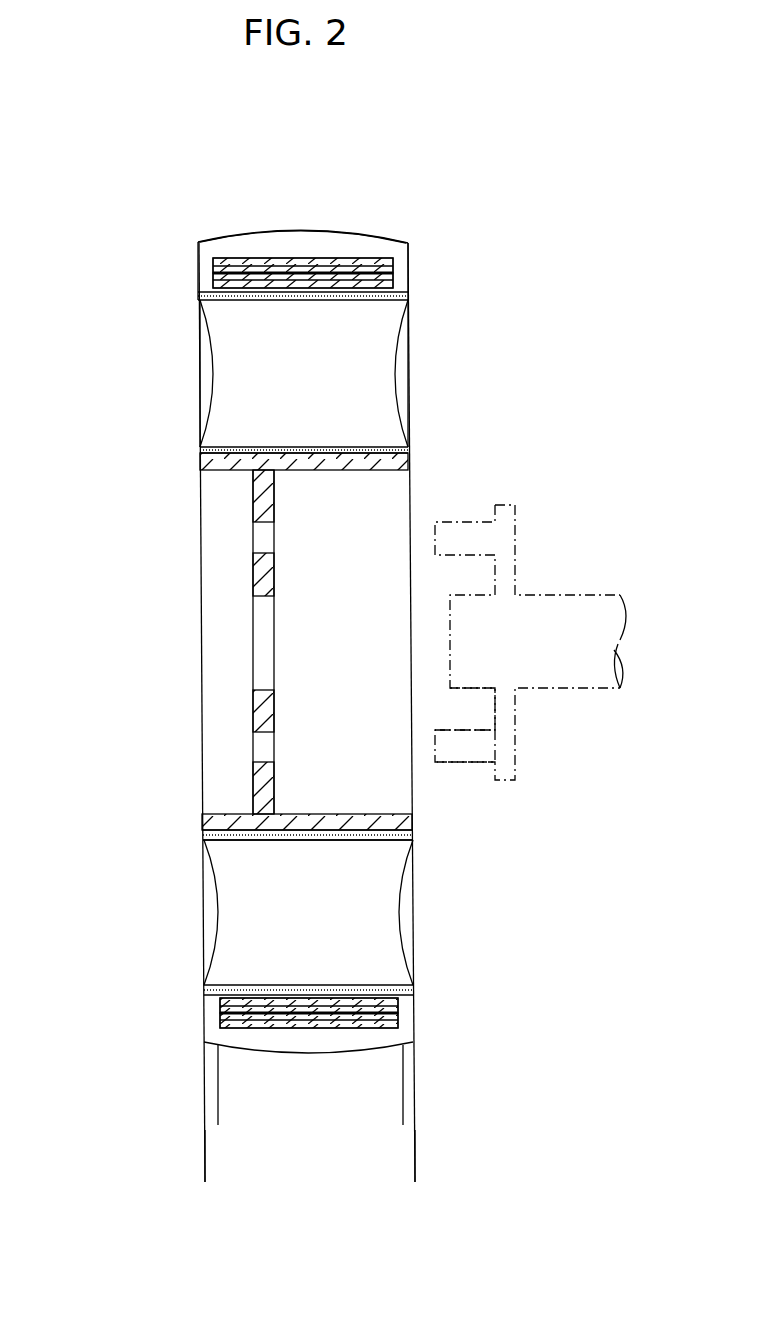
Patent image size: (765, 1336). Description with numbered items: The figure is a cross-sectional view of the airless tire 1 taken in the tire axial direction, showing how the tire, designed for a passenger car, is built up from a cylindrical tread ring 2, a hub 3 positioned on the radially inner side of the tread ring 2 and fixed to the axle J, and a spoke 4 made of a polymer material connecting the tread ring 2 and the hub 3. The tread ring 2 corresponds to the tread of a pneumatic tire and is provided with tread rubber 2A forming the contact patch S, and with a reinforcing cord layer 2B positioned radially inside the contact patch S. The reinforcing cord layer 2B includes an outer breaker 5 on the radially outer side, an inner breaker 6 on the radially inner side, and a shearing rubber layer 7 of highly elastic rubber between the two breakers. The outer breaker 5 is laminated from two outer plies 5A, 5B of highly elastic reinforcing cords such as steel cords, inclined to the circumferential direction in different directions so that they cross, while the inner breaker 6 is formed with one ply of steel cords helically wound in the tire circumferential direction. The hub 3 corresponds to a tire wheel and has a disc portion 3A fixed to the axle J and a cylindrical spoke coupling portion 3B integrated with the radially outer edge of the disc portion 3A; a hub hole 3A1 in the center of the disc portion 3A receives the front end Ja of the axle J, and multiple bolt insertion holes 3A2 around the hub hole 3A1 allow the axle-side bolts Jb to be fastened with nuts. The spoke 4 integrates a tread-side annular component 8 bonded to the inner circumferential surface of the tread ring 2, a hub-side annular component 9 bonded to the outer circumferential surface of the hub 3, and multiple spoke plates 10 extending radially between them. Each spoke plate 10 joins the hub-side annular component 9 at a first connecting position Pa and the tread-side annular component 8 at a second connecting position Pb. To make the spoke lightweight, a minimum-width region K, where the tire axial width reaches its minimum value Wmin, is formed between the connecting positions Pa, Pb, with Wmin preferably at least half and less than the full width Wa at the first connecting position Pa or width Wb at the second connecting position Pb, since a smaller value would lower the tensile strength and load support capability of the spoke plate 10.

The airless tire 1 is at (405, 183).
The tread ring 2 is at (185, 232).
The tread rubber 2A is at (313, 248).
The contact patch S is at (270, 233).
The reinforcing cord layer 2B is at (419, 228).
The outer breaker 5 is at (393, 222).
The outer ply 5A is at (395, 258).
The outer ply 5B is at (353, 262).
The inner breaker 6 is at (408, 292).
The shearing rubber layer 7 is at (215, 272).
The spoke 4 is at (417, 385).
The tread-side annular component 8 is at (350, 300).
The spoke plate 10 is at (396, 375).
The hub-side annular component 9 is at (353, 445).
The hub 3 is at (216, 694).
The disc portion 3A is at (165, 664).
The hub hole 3A1 is at (253, 597).
The bolt insertion hole 3A2 is at (253, 740).
The spoke coupling portion 3B is at (290, 828).
The minimum-width region K is at (412, 924).
The first connecting position Pa is at (340, 840).
The second connecting position Pb is at (355, 985).
The minimum value Wmin is at (401, 1121).
The width of first connecting position Wa is at (310, 1170).
The width of second connecting position Wb is at (413, 1177).
The axle J is at (556, 550).
The front end Ja is at (463, 690).
The bolt Jb is at (473, 763).